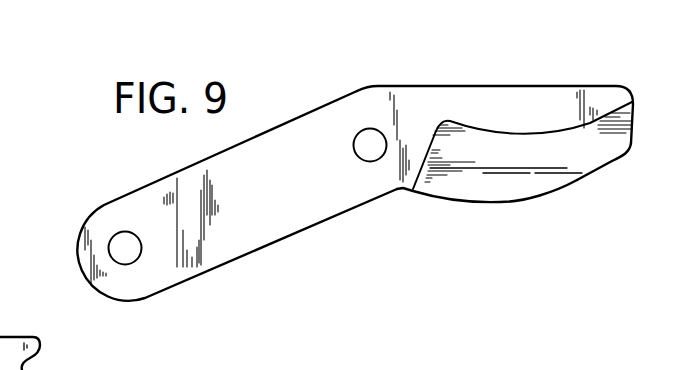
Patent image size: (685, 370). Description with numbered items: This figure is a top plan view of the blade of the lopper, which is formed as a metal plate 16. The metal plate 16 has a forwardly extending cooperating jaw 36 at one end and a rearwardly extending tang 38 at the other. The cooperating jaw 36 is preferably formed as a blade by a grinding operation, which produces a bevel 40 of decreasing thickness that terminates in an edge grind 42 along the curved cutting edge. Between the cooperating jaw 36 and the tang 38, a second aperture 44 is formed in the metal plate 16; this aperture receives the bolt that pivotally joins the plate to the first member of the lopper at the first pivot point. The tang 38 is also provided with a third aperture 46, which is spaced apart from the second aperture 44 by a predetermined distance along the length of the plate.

The metal plate 16 is at (503, 86).
The cooperating jaw 36 is at (605, 90).
The tang 38 is at (273, 230).
The bevel 40 is at (608, 157).
The edge grind 42 is at (530, 198).
The second aperture 44 is at (355, 147).
The third aperture 46 is at (133, 237).